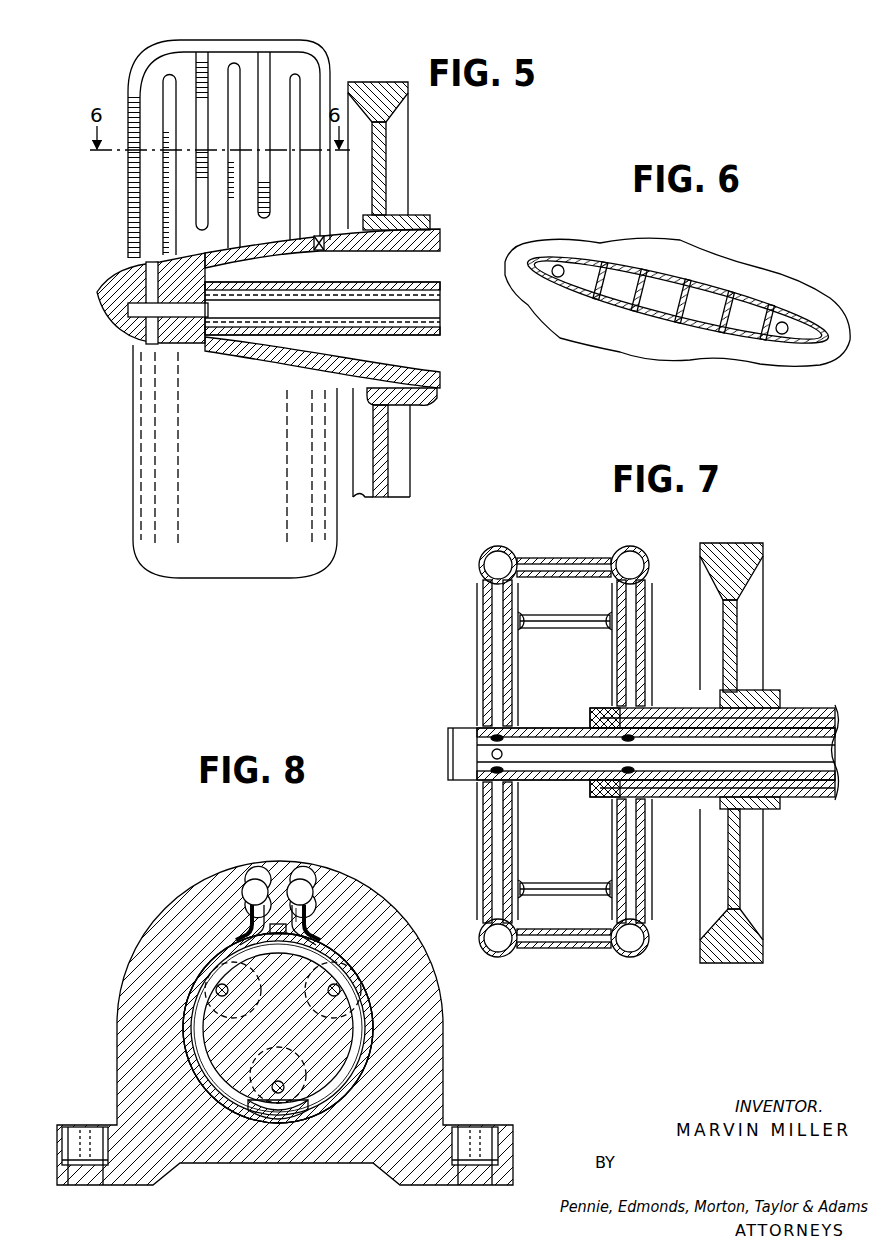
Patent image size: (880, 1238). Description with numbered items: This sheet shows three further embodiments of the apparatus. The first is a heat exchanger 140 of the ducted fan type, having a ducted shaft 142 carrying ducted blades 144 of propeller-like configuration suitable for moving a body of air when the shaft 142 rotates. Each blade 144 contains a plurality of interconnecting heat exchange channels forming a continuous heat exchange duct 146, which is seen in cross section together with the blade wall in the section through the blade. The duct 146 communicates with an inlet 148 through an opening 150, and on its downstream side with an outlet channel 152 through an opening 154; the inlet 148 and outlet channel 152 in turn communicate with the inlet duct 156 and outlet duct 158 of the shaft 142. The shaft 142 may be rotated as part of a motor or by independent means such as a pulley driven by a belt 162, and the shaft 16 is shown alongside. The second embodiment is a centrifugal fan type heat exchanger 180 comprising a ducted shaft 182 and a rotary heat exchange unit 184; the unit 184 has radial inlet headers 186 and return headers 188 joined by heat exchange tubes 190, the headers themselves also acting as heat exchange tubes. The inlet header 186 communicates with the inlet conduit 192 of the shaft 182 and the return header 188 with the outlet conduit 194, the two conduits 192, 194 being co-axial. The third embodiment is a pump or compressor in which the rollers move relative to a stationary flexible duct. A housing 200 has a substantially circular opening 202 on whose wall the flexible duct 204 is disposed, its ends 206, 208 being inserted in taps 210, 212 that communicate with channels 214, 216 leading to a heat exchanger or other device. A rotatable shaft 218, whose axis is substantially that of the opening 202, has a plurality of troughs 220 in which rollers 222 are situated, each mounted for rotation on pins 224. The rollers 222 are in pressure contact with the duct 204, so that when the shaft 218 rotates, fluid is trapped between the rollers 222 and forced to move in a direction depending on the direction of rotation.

In FIG. 5, the shaft 16 is at (386, 446).
In FIG. 5, the heat exchanger 140 is at (125, 350).
In FIG. 5, the ducted shaft 142 is at (438, 381).
In FIG. 6, the ducted blades 144 is at (653, 284).
In FIG. 5, the heat exchange duct 146 is at (236, 62).
In FIG. 6, the heat exchange duct 146 is at (645, 306).
In FIG. 5, the inlet 148 is at (150, 292).
In FIG. 5, the opening 150 is at (150, 266).
In FIG. 6, the opening 150 is at (560, 264).
In FIG. 5, the outlet channel 152 is at (308, 250).
In FIG. 5, the opening 154 is at (323, 243).
In FIG. 6, the opening 154 is at (785, 322).
In FIG. 5, the inlet duct 156 is at (207, 308).
In FIG. 5, the outlet duct 158 is at (250, 347).
In FIG. 5, the belt 162 is at (378, 97).
In FIG. 7, the heat exchanger 180 is at (464, 657).
In FIG. 7, the ducted shaft 182 is at (823, 798).
In FIG. 7, the rotary heat exchange unit 184 is at (642, 662).
In FIG. 7, the inlet headers 186 is at (498, 802).
In FIG. 7, the return headers 188 is at (636, 872).
In FIG. 7, the heat exchange tubes 190 is at (587, 614).
In FIG. 7, the inlet conduit 192 is at (672, 754).
In FIG. 7, the outlet conduit 194 is at (794, 786).
In FIG. 8, the housing 200 is at (432, 1012).
In FIG. 8, the circular opening 202 is at (372, 1076).
In FIG. 8, the flexible duct 204 is at (332, 946).
In FIG. 8, the end 206 is at (252, 920).
In FIG. 8, the end 208 is at (306, 928).
In FIG. 8, the tap 210 is at (258, 906).
In FIG. 8, the tap 212 is at (300, 916).
In FIG. 8, the channel 214 is at (256, 879).
In FIG. 8, the channel 216 is at (308, 879).
In FIG. 8, the rotatable shaft 218 is at (220, 1038).
In FIG. 8, the troughs 220 is at (254, 1112).
In FIG. 8, the rollers 222 is at (286, 1122).
In FIG. 8, the pins 224 is at (226, 990).